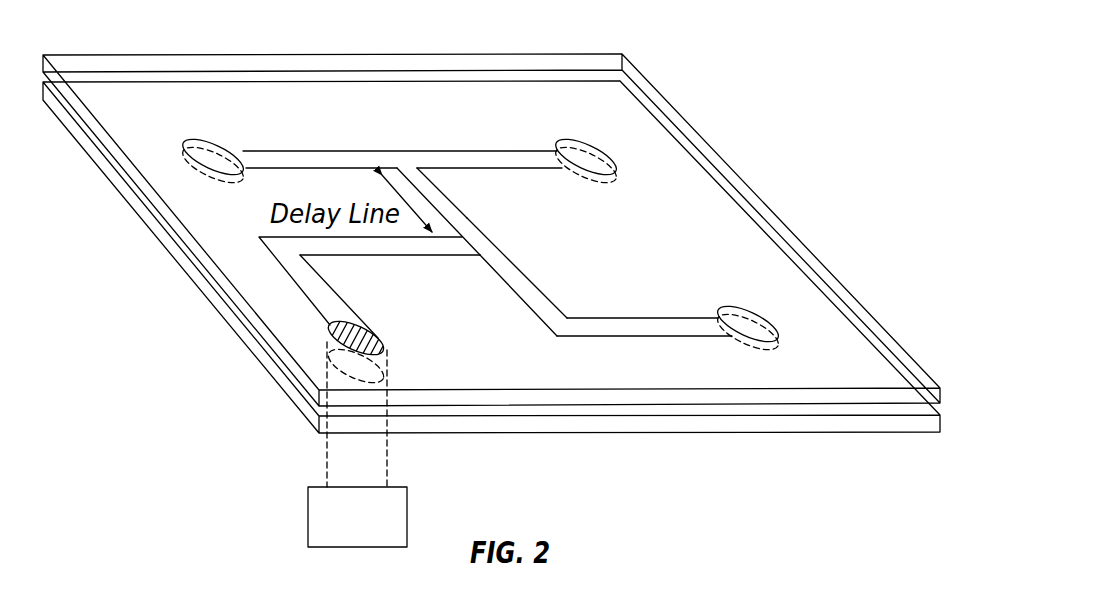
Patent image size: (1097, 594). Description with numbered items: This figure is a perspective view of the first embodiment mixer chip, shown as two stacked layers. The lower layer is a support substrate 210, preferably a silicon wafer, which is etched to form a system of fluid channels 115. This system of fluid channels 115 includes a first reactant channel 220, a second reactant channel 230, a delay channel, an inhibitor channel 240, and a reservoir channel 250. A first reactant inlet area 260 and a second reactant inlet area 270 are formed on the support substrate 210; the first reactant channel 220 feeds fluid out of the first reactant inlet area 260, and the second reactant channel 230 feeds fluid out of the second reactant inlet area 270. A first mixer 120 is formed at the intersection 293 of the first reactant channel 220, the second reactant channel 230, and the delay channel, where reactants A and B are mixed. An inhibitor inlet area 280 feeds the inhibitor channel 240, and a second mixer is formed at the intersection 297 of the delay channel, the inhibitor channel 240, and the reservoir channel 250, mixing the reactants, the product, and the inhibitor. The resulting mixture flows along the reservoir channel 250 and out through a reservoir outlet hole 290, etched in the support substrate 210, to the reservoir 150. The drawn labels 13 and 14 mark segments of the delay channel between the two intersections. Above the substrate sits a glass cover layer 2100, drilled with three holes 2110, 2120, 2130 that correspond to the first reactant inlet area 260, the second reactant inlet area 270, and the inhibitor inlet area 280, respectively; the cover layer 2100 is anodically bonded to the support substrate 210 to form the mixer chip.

The cover layer 2100 is at (143, 55).
The support substrate 210 is at (837, 433).
The hole 2110 is at (185, 140).
The first reactant inlet area 260 is at (205, 150).
The first mixer 120 is at (410, 151).
The first reactant channel 220 is at (295, 152).
The second reactant channel 230 is at (477, 151).
The hole 2120 is at (603, 147).
The second reactant inlet area 270 is at (617, 172).
The intersection 293 is at (425, 172).
The branch line 13 is at (483, 243).
The branch line 14 is at (517, 285).
The intersection 297 is at (480, 255).
The inhibitor channel 240 is at (628, 318).
The hole 2130 is at (770, 318).
The inhibitor inlet area 280 is at (777, 343).
The reservoir channel 250 is at (340, 294).
The reservoir outlet hole 290 is at (357, 385).
The reservoir 150 is at (380, 531).
The system of fluid channels 115 is at (340, 160).